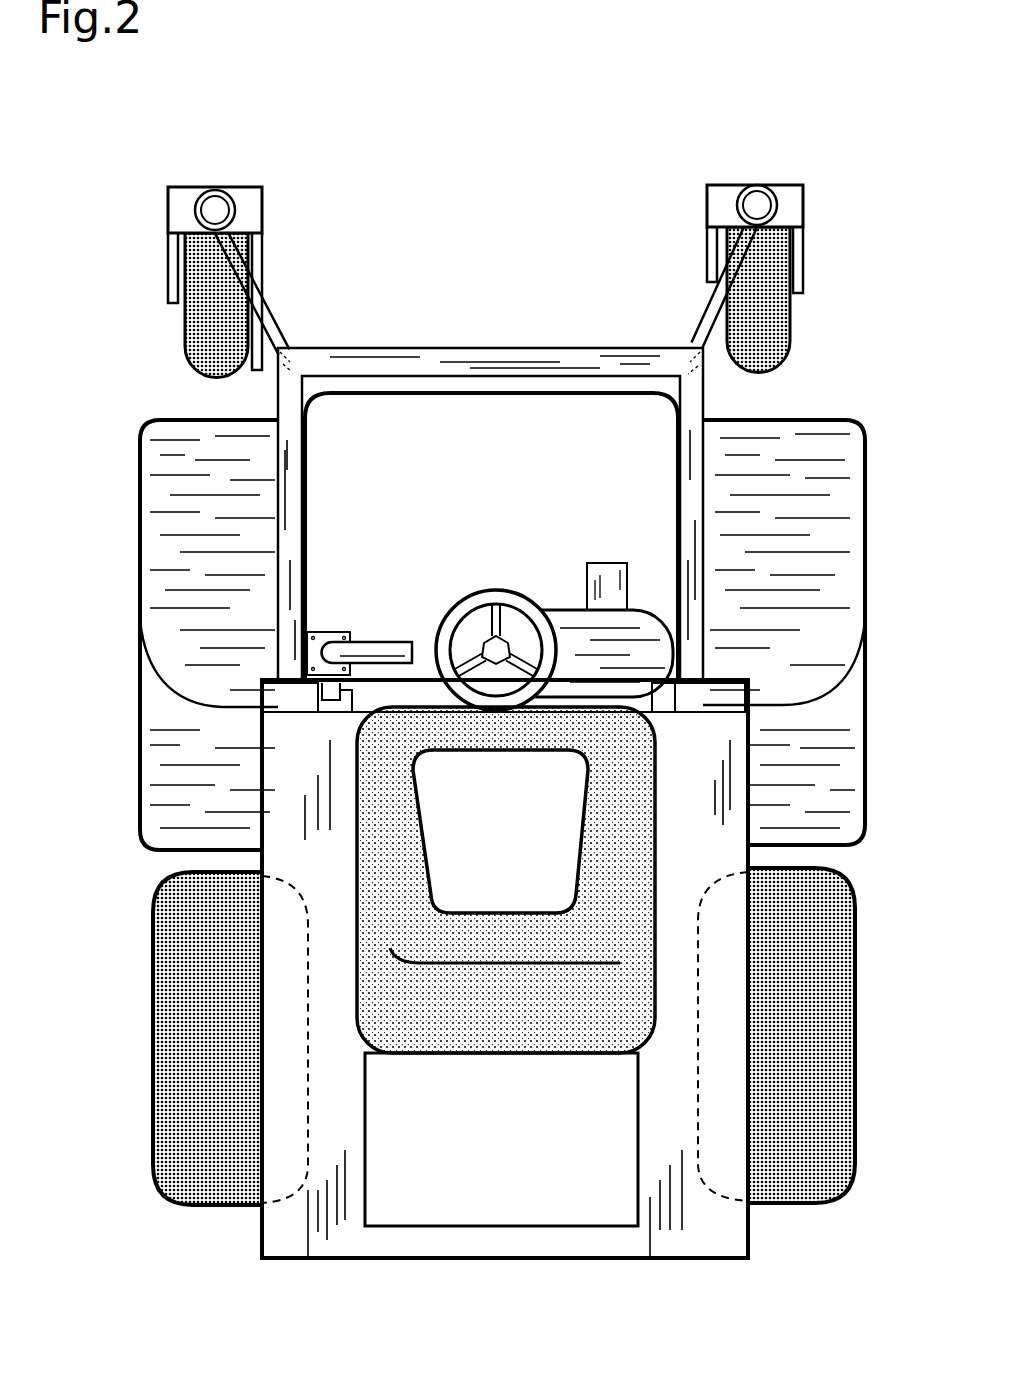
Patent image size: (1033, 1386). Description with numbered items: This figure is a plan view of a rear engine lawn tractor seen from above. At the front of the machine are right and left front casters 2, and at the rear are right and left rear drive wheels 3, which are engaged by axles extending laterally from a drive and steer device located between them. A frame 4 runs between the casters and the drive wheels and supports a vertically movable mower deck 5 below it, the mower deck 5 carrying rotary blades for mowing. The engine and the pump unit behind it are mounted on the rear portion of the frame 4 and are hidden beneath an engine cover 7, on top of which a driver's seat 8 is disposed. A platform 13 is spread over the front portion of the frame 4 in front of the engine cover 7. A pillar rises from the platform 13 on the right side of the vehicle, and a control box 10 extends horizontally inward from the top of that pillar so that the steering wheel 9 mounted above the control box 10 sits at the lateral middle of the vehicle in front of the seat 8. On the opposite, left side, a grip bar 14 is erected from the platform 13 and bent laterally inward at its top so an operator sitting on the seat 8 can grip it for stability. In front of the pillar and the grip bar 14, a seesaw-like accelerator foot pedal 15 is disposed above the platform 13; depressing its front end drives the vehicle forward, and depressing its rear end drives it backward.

The front casters 2 is at (793, 345).
The rear drive wheels 3 is at (852, 1180).
The frame 4 is at (608, 348).
The mower deck 5 is at (865, 753).
The engine cover 7 is at (330, 1250).
The driver's seat 8 is at (510, 828).
The steering wheel 9 is at (472, 594).
The control box 10 is at (565, 610).
The platform 13 is at (458, 474).
The grip bar 14 is at (378, 642).
The accelerator foot pedal 15 is at (612, 563).